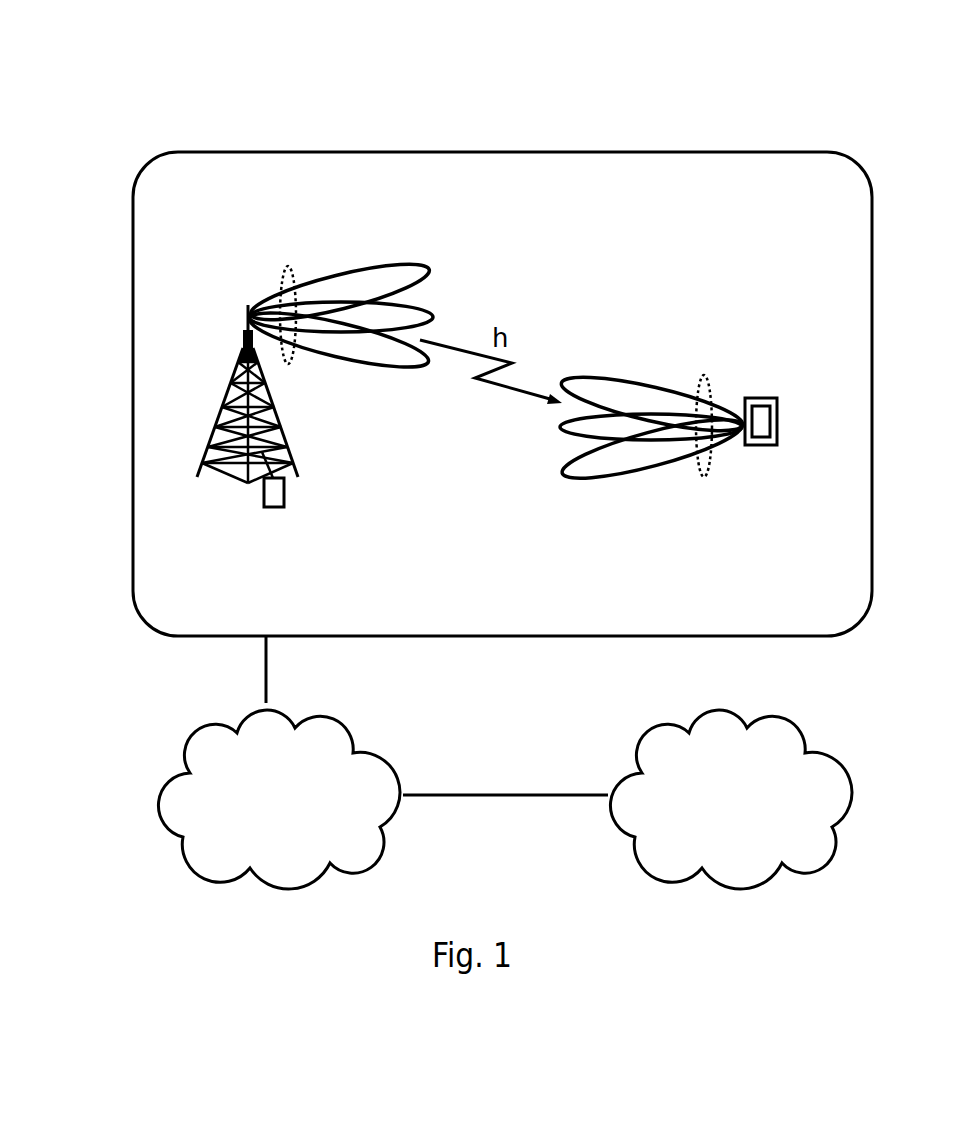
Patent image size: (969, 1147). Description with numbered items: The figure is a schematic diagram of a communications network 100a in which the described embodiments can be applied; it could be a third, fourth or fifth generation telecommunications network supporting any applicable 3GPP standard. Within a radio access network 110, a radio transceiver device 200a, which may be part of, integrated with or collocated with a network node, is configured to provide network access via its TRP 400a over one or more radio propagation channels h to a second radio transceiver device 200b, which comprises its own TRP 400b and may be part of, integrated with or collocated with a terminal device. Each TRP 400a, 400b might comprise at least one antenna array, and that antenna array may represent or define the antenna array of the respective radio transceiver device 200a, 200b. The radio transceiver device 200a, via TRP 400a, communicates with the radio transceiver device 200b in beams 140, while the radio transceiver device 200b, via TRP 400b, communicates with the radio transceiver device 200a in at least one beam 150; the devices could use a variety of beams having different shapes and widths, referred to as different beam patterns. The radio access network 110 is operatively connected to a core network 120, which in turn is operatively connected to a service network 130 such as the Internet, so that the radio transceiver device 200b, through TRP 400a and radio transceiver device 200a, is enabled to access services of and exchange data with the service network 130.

The communications network 100a is at (215, 66).
The radio access network 110 is at (132, 528).
The core network 120 is at (307, 816).
The service network 130 is at (758, 816).
The beams 140 is at (287, 266).
The beam 150 is at (705, 375).
The radio transceiver device 200a is at (263, 498).
The radio transceiver device 200b is at (762, 447).
The TRP 400a is at (246, 320).
The TRP 400b is at (814, 424).